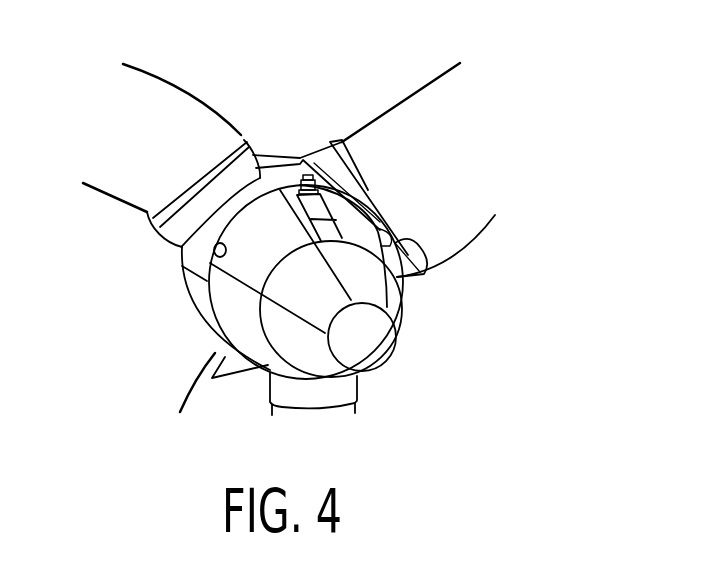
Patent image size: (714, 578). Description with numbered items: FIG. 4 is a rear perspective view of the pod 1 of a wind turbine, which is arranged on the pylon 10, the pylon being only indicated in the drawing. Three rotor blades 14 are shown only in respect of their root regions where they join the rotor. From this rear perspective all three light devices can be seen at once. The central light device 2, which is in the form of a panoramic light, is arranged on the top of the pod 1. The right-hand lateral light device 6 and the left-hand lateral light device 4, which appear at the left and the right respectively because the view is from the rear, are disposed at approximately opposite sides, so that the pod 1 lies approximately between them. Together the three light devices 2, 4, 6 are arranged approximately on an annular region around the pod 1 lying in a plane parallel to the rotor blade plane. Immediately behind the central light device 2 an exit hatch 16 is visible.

The pod 1 is at (443, 350).
The central light device 2 is at (297, 155).
The left-hand lateral light device 4 is at (435, 275).
The right-hand lateral light device 6 is at (214, 251).
The pylon 10 is at (356, 404).
The rotor blades 14 is at (115, 183).
The exit hatch 16 is at (307, 173).